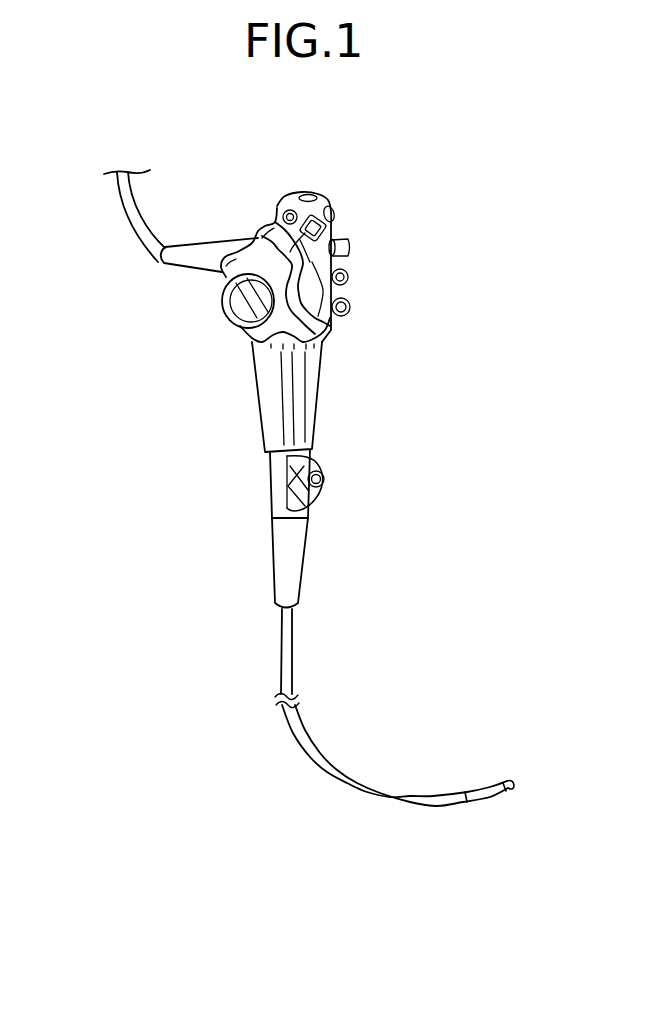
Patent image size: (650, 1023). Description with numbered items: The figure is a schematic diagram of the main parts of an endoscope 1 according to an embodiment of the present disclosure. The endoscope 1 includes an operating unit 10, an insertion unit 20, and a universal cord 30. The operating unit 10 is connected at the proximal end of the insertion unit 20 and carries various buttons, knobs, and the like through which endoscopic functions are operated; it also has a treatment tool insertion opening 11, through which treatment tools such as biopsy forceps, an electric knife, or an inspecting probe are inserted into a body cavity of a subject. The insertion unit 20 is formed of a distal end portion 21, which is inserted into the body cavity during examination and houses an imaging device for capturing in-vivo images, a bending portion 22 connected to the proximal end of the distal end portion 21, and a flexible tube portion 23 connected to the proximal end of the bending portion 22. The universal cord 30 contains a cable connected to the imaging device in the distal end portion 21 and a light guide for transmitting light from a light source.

The endoscope 1 is at (458, 340).
The operating unit 10 is at (343, 293).
The treatment tool insertion opening 11 is at (325, 480).
The insertion unit 20 is at (338, 792).
The distal end portion 21 is at (509, 798).
The bending portion 22 is at (489, 788).
The flexible tube portion 23 is at (292, 657).
The universal cord 30 is at (118, 202).